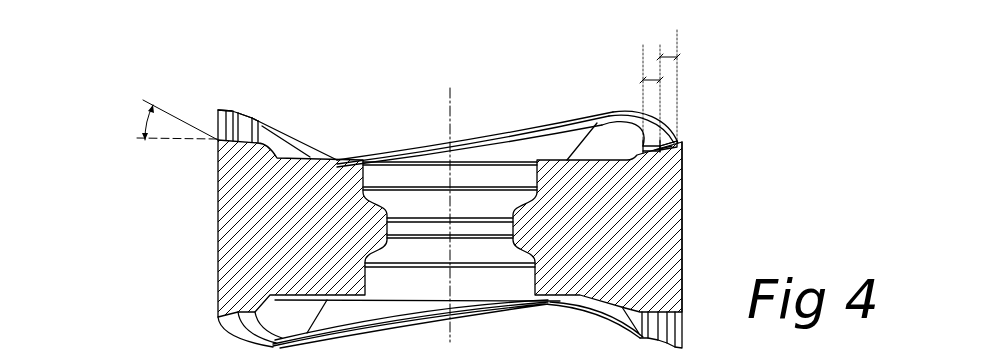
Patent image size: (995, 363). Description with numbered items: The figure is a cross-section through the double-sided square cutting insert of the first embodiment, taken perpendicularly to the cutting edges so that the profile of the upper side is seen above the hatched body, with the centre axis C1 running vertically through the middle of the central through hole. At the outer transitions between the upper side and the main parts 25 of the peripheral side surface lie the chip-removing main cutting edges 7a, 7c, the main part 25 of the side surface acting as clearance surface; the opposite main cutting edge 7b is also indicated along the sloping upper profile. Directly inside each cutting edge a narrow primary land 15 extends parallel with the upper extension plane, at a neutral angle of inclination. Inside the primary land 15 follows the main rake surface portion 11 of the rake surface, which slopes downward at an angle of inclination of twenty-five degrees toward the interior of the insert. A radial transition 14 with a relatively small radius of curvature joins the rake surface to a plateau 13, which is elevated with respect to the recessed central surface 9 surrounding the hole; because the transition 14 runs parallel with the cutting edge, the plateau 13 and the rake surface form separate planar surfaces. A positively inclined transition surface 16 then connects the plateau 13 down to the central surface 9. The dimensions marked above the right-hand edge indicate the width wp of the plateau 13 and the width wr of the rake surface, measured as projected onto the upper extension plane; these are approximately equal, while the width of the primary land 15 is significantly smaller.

The main part of the side surface 25 is at (218, 226).
The main cutting edge 7a is at (678, 143).
The main cutting edge 7b is at (560, 122).
The main cutting edge 7c is at (218, 140).
The central surface 9 is at (337, 160).
The main rake surface portion 11 is at (229, 139).
The plateau 13 is at (247, 140).
The transition 14 is at (482, 138).
The primary land 15 is at (678, 137).
The transition surface 16 is at (635, 153).
The centre axis C1 is at (442, 201).
The width of the plateau wp is at (653, 78).
The width of the rake surface wr is at (670, 57).